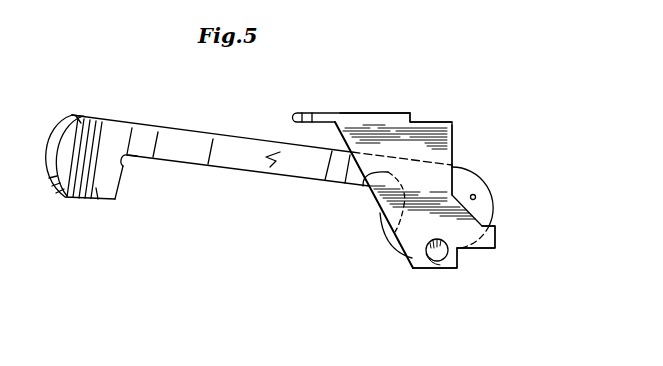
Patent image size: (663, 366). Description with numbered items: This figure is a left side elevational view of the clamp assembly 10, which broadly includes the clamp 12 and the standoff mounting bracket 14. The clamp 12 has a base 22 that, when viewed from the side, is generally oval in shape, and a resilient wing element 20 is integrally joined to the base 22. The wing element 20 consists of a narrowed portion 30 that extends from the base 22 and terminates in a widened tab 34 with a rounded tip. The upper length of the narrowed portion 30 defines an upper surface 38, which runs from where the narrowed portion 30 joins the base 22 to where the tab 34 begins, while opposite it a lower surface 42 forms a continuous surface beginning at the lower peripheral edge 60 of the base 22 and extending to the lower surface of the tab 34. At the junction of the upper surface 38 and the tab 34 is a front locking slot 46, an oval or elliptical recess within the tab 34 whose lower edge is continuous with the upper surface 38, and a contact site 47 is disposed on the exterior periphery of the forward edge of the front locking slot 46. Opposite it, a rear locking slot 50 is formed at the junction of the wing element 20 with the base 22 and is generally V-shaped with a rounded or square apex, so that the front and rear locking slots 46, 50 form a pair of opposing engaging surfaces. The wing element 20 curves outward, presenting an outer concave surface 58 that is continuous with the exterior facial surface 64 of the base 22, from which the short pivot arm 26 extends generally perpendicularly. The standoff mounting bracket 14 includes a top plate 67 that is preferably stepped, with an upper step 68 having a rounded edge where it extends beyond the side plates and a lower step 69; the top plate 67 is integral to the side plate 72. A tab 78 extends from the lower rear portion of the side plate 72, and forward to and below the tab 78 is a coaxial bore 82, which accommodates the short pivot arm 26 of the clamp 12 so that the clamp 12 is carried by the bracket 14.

The clamp assembly 10 is at (384, 272).
The clamp 12 is at (313, 198).
The standoff mounting bracket 14 is at (455, 140).
The wing element 20 is at (189, 128).
The base 22 is at (502, 202).
The short pivot arm 26 is at (418, 262).
The narrowed portion 30 is at (221, 168).
The tab 34 is at (93, 186).
The upper surface 38 is at (302, 180).
The lower surface 42 is at (236, 135).
The front locking slot 46 is at (129, 158).
The contact site 47 is at (133, 170).
The rear locking slot 50 is at (383, 224).
The outer concave surface 58 is at (270, 167).
The lower peripheral edge 60 is at (459, 167).
The exterior facial surface 64 is at (479, 178).
The top plate 67 is at (402, 106).
The upper step 68 is at (357, 112).
The lower step 69 is at (440, 122).
The side plate 72 is at (363, 190).
The tab 78 is at (495, 238).
The coaxial bore 82 is at (461, 256).